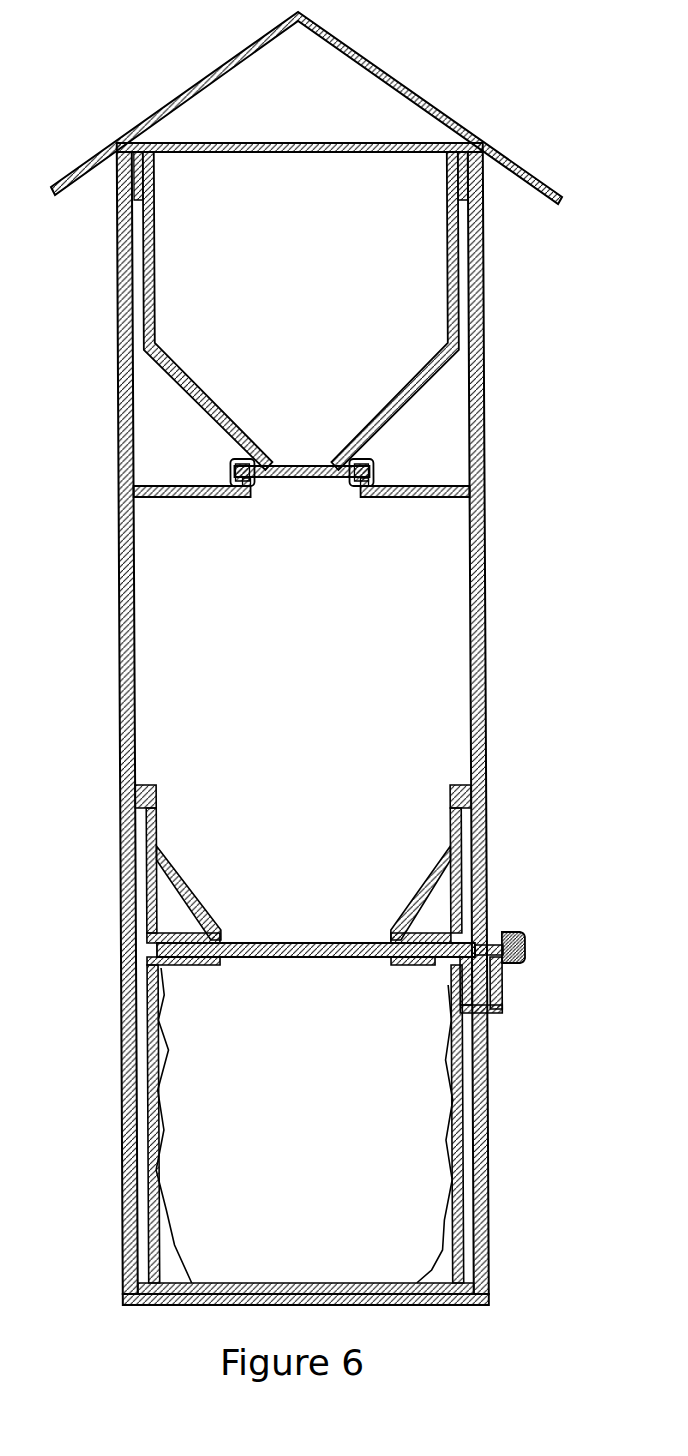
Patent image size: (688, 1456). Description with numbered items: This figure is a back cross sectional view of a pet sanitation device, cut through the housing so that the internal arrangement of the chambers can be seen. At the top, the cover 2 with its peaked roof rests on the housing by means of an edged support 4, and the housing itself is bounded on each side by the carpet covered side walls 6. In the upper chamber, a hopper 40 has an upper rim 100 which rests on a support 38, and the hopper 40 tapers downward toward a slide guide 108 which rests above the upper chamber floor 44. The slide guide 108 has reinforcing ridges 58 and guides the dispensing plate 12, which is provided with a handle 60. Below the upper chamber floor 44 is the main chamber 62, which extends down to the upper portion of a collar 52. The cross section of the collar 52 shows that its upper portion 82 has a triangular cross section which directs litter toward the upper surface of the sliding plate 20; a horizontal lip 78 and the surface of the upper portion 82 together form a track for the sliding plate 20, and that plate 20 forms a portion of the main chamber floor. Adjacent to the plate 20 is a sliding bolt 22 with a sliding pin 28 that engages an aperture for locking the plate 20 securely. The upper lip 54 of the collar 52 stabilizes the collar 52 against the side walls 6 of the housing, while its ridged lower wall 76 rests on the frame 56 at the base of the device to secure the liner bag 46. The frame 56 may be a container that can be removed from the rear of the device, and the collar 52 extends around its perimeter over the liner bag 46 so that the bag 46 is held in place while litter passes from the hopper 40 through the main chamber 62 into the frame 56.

The cover 2 is at (306, 108).
The edged support 4 is at (490, 186).
The side walls 6 is at (326, 723).
The second sliding plate 12 is at (301, 435).
The slideable plate 20 is at (316, 970).
The sliding bolt 22 is at (508, 1003).
The sliding pin 28 is at (515, 920).
The support 38 is at (102, 211).
The hopper 40 is at (341, 311).
The upper chamber floor 44 is at (302, 519).
The liner bag 46 is at (345, 1124).
The collar 52 is at (337, 870).
The upper lip 54 is at (346, 782).
The frame 56 is at (337, 1237).
The reinforcing ridges 58 is at (333, 469).
The handle 60 is at (548, 947).
The main chamber 62 is at (496, 599).
The ridged lower wall 76 is at (440, 1012).
The horizontal lip 78 is at (299, 973).
The upper portion 82 is at (303, 893).
The upper rim 100 is at (300, 175).
The slide guide 108 is at (306, 527).